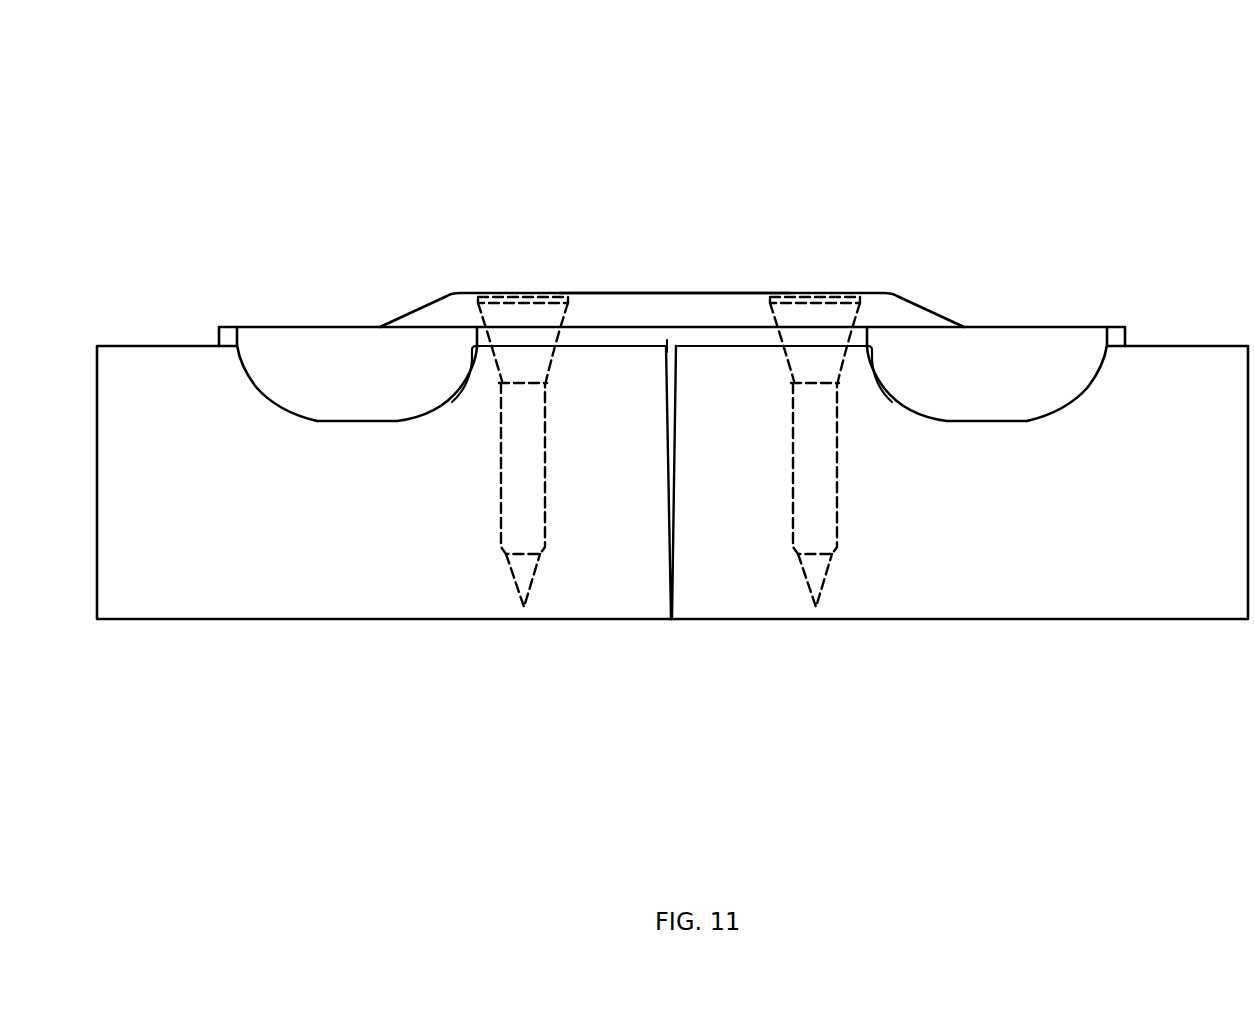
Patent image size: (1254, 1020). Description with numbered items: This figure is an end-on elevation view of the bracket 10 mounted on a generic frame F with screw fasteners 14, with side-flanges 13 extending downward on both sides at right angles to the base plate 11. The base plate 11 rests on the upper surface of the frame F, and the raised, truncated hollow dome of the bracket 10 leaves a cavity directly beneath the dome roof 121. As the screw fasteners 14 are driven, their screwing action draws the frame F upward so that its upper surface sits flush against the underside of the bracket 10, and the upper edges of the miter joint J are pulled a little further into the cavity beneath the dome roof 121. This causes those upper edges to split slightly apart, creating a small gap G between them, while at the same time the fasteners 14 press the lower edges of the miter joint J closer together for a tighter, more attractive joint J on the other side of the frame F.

The bracket 10 is at (915, 288).
The base plate 11 is at (708, 337).
The dome roof 121 is at (610, 291).
The side-flange 13 is at (328, 352).
The fastener 14 is at (517, 310).
The frame F is at (322, 602).
The miter joint J is at (672, 619).
The gap G is at (666, 347).